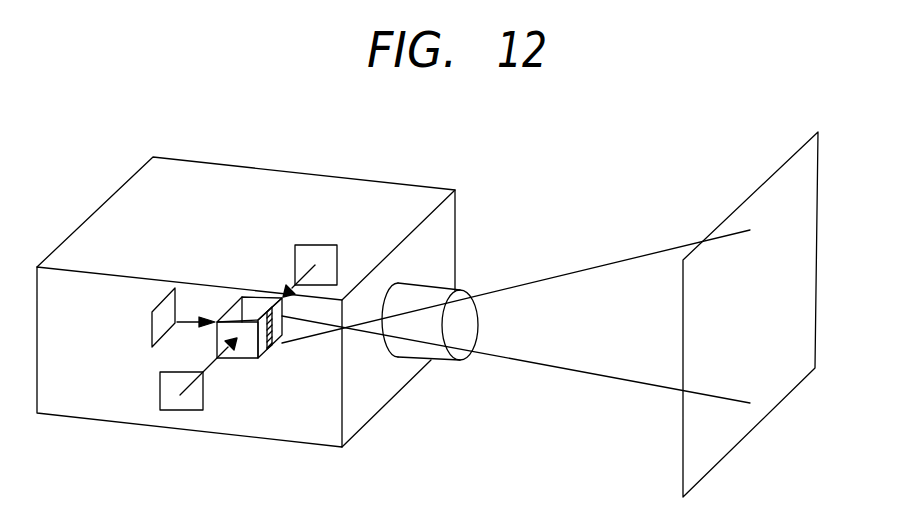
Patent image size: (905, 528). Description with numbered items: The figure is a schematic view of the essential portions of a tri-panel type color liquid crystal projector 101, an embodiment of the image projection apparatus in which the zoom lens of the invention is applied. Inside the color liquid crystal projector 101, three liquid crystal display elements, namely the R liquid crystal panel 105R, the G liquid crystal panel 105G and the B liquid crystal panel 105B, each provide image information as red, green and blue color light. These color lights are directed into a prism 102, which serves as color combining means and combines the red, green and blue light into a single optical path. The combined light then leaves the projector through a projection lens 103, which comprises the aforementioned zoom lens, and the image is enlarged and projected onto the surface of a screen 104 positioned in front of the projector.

The color liquid crystal projector 101 is at (107, 200).
The prism 102 is at (250, 358).
The projection lens 103 is at (415, 348).
The screen 104 is at (808, 290).
The G liquid crystal panel 105G is at (152, 320).
The R liquid crystal panel 105R is at (160, 390).
The B liquid crystal panel 105B is at (312, 247).